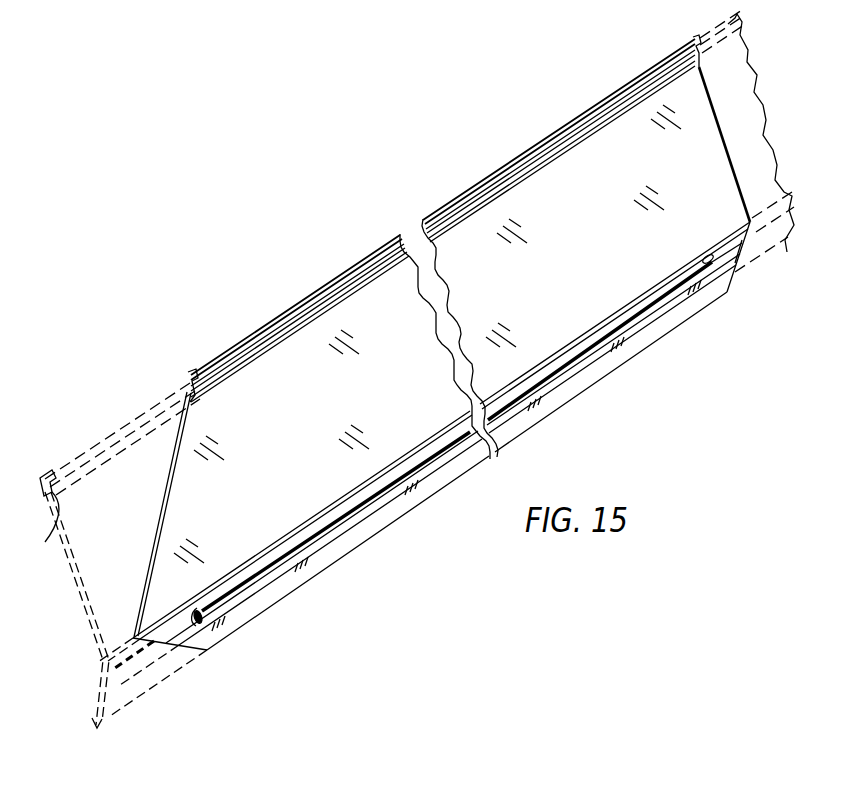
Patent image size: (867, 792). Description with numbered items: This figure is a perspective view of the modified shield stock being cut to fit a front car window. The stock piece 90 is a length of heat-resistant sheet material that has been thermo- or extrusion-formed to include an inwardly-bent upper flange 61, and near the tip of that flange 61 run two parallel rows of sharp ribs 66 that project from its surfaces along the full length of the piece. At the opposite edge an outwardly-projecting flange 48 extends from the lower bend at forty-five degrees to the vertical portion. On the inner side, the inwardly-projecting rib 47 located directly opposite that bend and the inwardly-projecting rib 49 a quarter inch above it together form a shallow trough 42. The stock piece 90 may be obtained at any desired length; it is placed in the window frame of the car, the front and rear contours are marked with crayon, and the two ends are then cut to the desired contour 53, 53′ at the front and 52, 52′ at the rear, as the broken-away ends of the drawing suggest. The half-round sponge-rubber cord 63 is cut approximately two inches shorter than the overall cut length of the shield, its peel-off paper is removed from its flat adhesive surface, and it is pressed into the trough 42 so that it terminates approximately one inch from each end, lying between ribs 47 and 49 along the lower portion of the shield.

The trough 42 is at (170, 628).
The inwardly-projecting rib 47 is at (115, 690).
The second flange 48 is at (108, 712).
The inwardly-projecting rib 49 is at (103, 661).
The rear contour 52 is at (730, 157).
The rear contour 52′ is at (737, 267).
The front contour 53 is at (158, 503).
The front contour 53′ is at (170, 645).
The flange 61 is at (42, 533).
The half-round sponge-rubber cord 63 is at (250, 578).
The sharp ribs 66 is at (221, 334).
The stock piece 90 is at (72, 580).